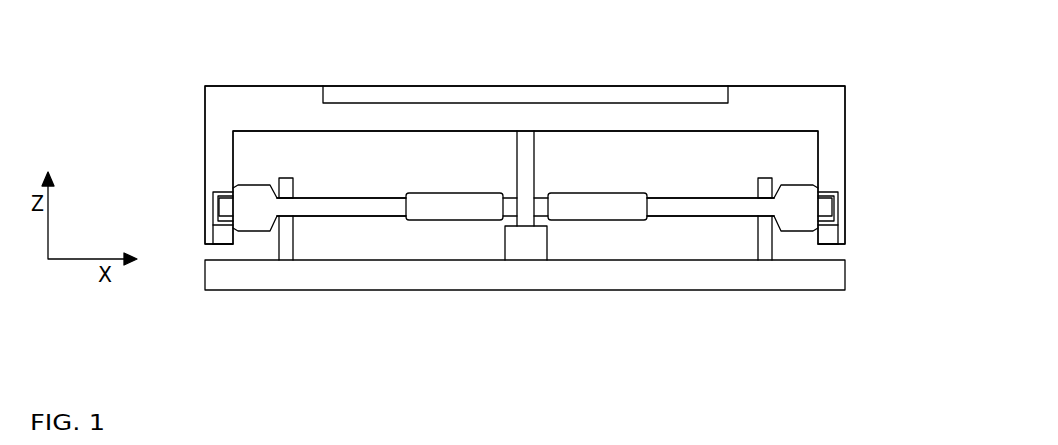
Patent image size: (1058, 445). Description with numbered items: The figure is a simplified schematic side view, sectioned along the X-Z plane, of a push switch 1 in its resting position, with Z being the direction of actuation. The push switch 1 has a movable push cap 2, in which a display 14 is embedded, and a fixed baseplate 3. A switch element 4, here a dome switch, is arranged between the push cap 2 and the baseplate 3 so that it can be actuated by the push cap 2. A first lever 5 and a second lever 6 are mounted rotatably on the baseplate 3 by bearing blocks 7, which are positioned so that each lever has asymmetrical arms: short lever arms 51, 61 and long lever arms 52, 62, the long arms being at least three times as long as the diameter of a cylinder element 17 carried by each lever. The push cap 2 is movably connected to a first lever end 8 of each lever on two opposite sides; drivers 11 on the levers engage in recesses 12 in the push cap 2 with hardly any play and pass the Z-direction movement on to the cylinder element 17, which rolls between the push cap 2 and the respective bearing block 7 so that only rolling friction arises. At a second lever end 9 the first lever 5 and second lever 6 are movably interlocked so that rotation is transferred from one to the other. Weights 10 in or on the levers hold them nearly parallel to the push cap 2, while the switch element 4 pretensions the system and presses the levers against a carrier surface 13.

The push switch 1 is at (883, 80).
The push cap 2 is at (207, 112).
The baseplate 3 is at (233, 290).
The switch element 4 is at (533, 155).
The first lever 5 is at (353, 216).
The second lever 6 is at (709, 216).
The bearing blocks 7 is at (294, 243).
The first lever end 8 is at (226, 207).
The second lever end 9 is at (542, 207).
The weights 10 is at (452, 220).
The drivers 11 is at (224, 195).
The recesses 12 is at (224, 223).
The carrier surface 13 is at (510, 227).
The display 14 is at (645, 86).
The cylinder element 17 is at (253, 231).
The short lever arm 51 is at (255, 205).
The long lever arm 52 is at (333, 206).
The short lever arm 61 is at (790, 205).
The long lever arm 62 is at (720, 205).